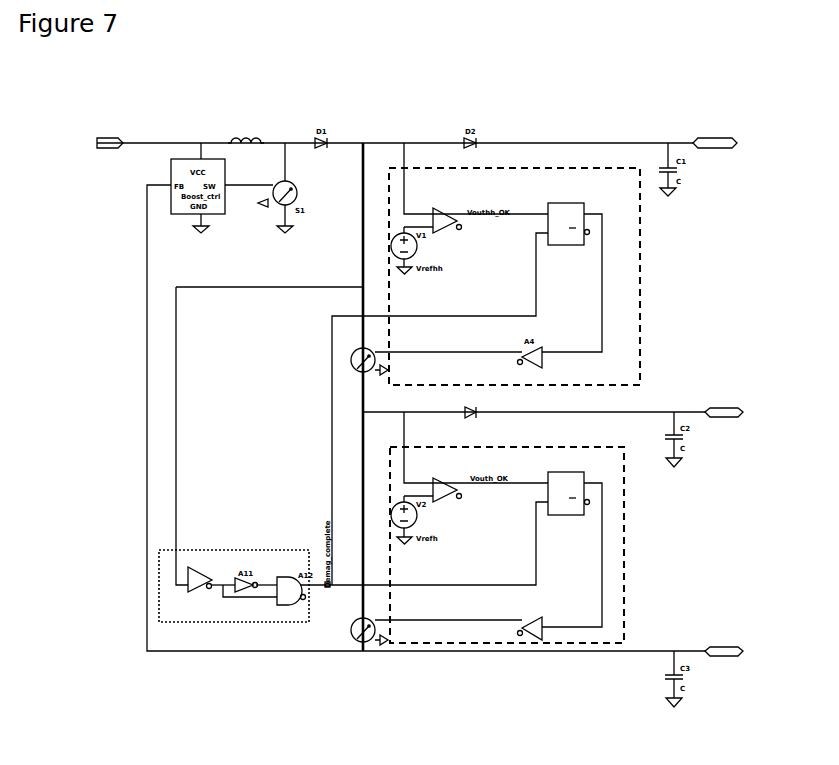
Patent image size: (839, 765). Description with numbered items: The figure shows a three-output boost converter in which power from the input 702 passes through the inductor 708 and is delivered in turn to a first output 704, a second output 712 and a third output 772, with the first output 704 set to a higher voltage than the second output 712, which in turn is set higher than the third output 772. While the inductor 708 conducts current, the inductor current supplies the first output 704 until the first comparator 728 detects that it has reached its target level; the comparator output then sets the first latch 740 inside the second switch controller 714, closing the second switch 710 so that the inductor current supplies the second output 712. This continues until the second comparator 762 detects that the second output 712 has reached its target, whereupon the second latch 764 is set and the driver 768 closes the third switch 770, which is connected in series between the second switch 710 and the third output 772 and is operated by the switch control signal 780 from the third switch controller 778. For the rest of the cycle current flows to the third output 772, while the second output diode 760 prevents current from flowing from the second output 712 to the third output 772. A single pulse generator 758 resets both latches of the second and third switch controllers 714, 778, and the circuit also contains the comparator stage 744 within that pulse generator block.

The input 702 is at (108, 139).
The inductor L1 708 is at (253, 135).
The first output 704 is at (728, 137).
The comparator A1 728 is at (440, 207).
The latch A2 740 is at (585, 203).
The second switch controller 714 is at (640, 235).
The second switch S2 710 is at (350, 358).
The second output diode D3 760 is at (475, 412).
The second output 712 is at (727, 405).
The comparator A7 762 is at (433, 482).
The latch A8 764 is at (582, 480).
The comparator A9 744 is at (192, 576).
The pulse generator 758 is at (213, 620).
The third switch controller 778 is at (624, 580).
The third switch S3 770 is at (353, 630).
The switch control signal 780 is at (445, 622).
The driver A10 768 is at (532, 633).
The third output 772 is at (723, 655).